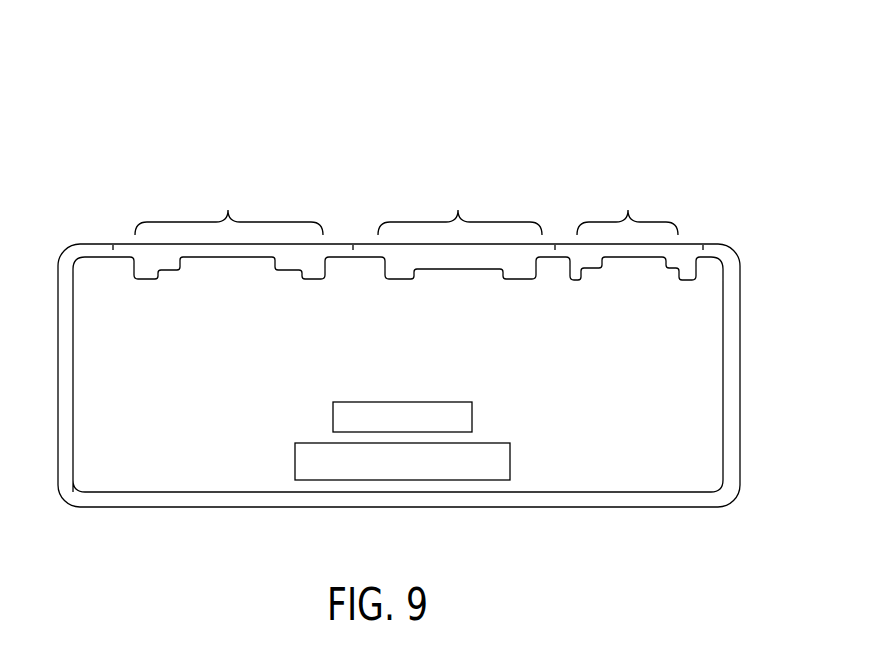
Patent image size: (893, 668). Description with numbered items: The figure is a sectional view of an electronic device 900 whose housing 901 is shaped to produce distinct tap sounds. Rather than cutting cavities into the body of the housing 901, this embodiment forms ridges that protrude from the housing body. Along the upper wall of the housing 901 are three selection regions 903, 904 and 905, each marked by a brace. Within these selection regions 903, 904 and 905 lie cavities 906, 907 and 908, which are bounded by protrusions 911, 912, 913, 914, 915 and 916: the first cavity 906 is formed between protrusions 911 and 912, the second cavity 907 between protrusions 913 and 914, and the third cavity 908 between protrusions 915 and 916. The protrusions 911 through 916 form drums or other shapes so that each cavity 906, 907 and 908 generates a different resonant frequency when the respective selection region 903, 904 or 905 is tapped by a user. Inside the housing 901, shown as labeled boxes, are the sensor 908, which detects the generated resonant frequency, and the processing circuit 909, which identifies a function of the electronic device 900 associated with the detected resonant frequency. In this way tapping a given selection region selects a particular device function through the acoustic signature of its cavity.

The electronic device 900 is at (707, 88).
The housing 901 is at (741, 283).
The selection region 903 is at (229, 209).
The selection region 904 is at (460, 209).
The selection region 905 is at (627, 209).
The cavity 906 is at (230, 267).
The cavity 907 is at (460, 280).
The sensor 908 is at (472, 413).
The processing circuit 909 is at (510, 463).
The protrusion 911 is at (140, 277).
The protrusion 912 is at (313, 275).
The protrusion 913 is at (400, 270).
The protrusion 914 is at (520, 268).
The protrusion 915 is at (578, 268).
The protrusion 916 is at (680, 270).